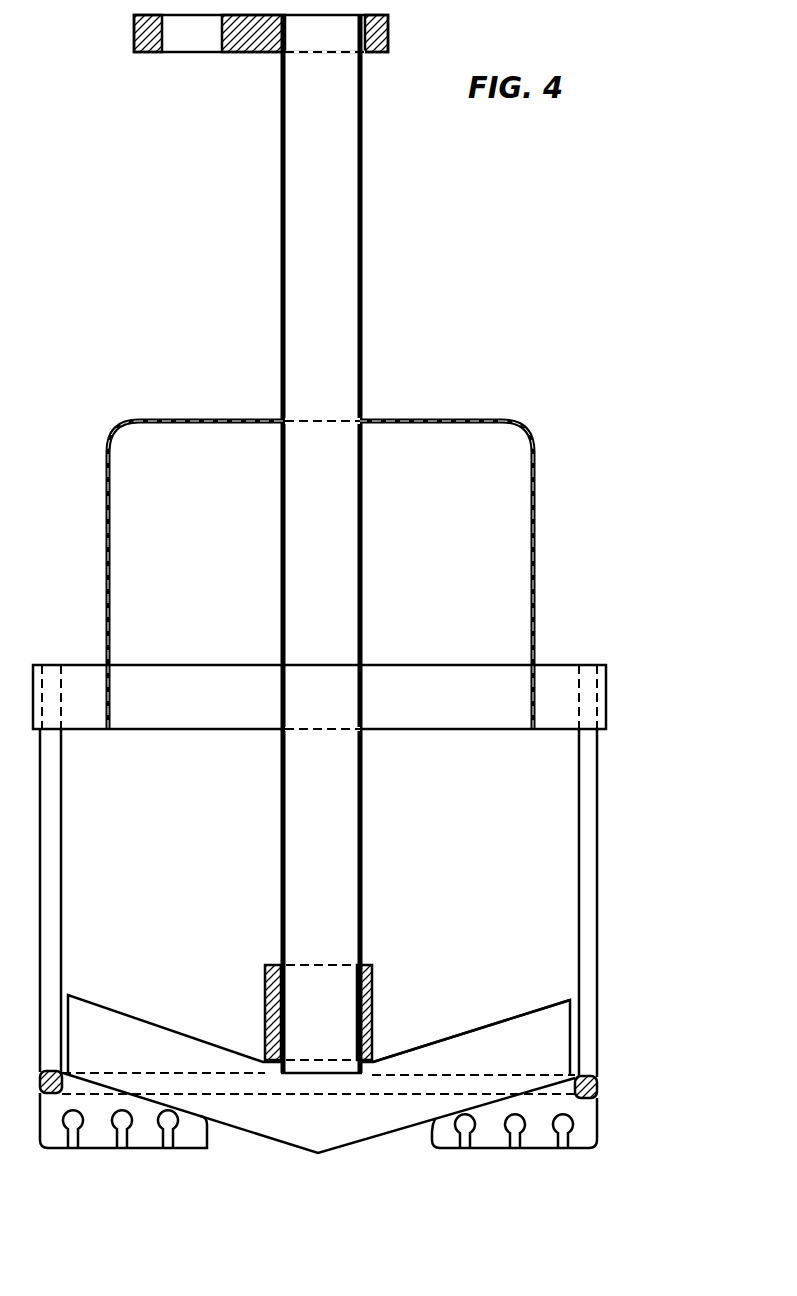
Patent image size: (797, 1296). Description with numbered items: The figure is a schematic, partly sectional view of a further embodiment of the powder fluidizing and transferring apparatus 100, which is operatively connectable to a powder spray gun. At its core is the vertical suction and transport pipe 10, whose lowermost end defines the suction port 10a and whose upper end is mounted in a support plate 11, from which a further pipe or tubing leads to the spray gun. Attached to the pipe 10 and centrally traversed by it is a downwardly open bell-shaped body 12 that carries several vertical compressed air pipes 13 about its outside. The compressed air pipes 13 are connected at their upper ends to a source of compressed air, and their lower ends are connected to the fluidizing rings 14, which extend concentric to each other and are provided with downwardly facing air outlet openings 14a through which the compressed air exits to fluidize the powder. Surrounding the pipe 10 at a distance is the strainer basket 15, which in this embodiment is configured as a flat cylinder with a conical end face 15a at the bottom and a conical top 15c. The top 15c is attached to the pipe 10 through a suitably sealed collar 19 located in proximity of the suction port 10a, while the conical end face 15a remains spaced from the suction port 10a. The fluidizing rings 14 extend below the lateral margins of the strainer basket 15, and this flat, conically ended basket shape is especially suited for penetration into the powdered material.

The vertical suction and transport pipe 10 is at (343, 253).
The suction port 10a is at (307, 1077).
The support plate 11 is at (253, 50).
The bell-shaped body 12 is at (537, 582).
The compressed air pipes 13 is at (590, 858).
The fluidizing rings 14 is at (587, 1118).
The air outlet openings 14a is at (465, 1150).
The strainer basket 15 is at (552, 1045).
The conical end face 15a is at (343, 1152).
The conical top 15c is at (452, 1038).
The collar 19 is at (380, 993).
The powder fluidizing and transferring apparatus 100 is at (433, 381).